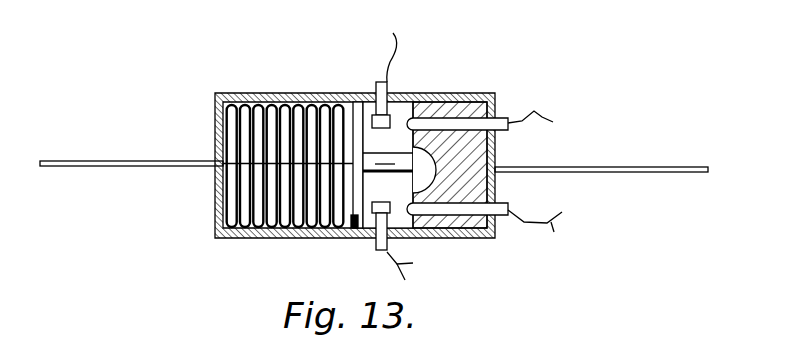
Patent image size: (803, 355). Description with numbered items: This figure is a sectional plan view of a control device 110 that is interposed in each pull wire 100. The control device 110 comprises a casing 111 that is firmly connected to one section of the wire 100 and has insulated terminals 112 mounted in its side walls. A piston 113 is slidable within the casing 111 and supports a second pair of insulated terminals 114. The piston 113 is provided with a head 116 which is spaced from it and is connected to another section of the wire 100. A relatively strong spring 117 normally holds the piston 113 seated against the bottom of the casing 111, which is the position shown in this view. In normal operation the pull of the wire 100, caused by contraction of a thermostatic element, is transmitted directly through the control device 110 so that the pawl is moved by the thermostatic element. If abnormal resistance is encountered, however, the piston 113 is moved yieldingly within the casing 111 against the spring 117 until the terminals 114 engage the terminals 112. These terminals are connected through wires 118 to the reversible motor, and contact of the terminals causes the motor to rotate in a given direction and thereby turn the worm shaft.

The pull wire 100 is at (98, 160).
The control device 110 is at (393, 143).
The casing 111 is at (267, 93).
The insulated terminals 112 is at (376, 85).
The piston 113 is at (463, 148).
The insulated terminals 114 is at (498, 118).
The head 116 is at (327, 242).
The spring 117 is at (230, 205).
The wires 118 is at (494, 145).